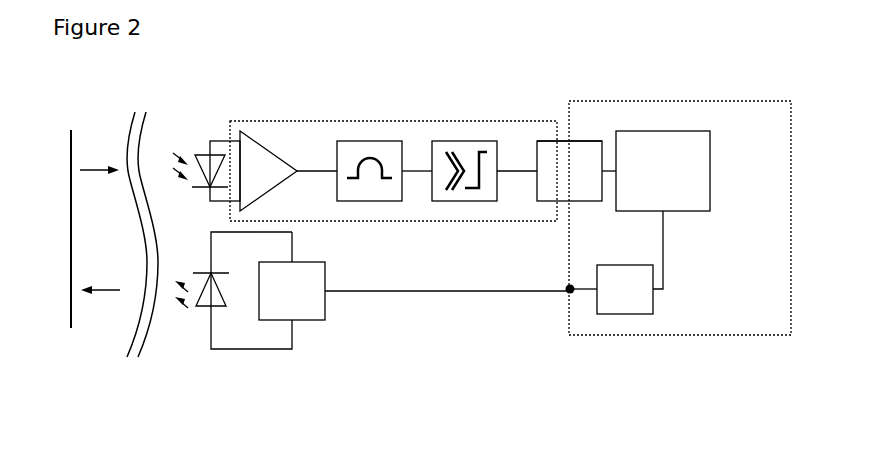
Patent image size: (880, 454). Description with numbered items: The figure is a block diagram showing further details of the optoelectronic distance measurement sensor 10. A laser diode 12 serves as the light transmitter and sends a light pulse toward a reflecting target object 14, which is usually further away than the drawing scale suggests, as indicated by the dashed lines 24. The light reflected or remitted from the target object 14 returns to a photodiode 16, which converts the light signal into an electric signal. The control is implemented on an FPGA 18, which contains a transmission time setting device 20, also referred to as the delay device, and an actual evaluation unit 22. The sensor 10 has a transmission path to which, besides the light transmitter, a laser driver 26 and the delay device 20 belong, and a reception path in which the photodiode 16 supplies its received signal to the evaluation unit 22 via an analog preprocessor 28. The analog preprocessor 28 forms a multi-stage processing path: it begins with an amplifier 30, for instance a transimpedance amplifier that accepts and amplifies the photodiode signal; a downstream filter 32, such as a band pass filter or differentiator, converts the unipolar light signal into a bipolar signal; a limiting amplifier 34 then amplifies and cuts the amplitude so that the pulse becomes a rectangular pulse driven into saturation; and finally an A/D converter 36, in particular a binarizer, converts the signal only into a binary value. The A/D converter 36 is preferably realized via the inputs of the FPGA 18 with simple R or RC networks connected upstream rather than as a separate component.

The sensor 10 is at (393, 113).
The laser diode 12 is at (233, 310).
The target object 14 is at (55, 254).
The photodiode 16 is at (204, 150).
The FPGA 18 is at (680, 198).
The transmission time setting device 20 is at (616, 299).
The evaluation unit 22 is at (661, 141).
The dashed lines 24 is at (122, 223).
The laser driver 26 is at (414, 305).
The analog preprocessor 28 is at (568, 96).
The amplifier 30 is at (288, 146).
The filter 32 is at (384, 141).
The limiting amplifier 34 is at (484, 141).
The A/D converter 36 is at (560, 141).